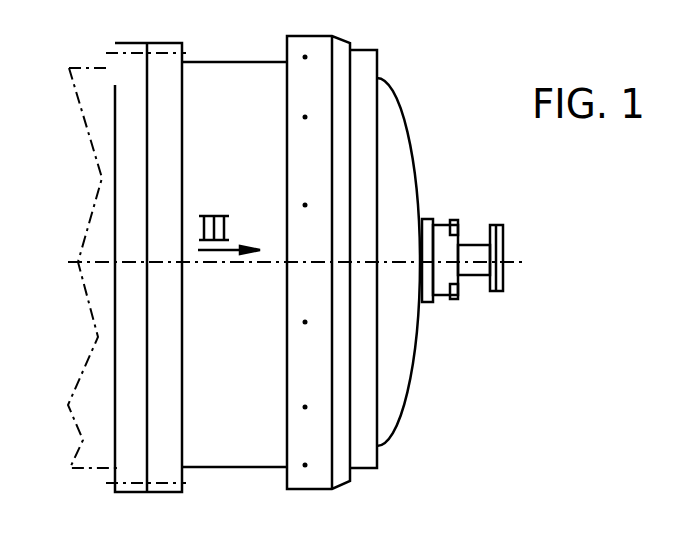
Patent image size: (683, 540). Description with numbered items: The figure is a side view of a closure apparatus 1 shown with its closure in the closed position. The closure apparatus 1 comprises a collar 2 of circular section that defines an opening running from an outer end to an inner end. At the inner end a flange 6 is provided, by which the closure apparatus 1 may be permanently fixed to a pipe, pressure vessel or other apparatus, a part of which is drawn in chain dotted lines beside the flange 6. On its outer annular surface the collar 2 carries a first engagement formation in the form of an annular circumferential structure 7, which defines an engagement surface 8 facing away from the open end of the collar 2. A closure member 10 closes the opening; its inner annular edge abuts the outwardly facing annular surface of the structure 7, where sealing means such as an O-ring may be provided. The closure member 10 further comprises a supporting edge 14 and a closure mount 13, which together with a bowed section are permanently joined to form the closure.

The closure apparatus 1 is at (418, 98).
The collar 2 is at (233, 62).
The flange 6 is at (165, 492).
The annular circumferential structure 7 is at (72, 420).
The engagement surface 8 is at (314, 250).
The closure member 10 is at (408, 386).
The closure mount 13 is at (477, 245).
The supporting edge 14 is at (362, 469).